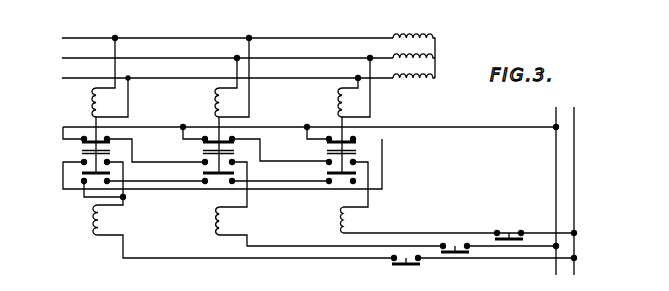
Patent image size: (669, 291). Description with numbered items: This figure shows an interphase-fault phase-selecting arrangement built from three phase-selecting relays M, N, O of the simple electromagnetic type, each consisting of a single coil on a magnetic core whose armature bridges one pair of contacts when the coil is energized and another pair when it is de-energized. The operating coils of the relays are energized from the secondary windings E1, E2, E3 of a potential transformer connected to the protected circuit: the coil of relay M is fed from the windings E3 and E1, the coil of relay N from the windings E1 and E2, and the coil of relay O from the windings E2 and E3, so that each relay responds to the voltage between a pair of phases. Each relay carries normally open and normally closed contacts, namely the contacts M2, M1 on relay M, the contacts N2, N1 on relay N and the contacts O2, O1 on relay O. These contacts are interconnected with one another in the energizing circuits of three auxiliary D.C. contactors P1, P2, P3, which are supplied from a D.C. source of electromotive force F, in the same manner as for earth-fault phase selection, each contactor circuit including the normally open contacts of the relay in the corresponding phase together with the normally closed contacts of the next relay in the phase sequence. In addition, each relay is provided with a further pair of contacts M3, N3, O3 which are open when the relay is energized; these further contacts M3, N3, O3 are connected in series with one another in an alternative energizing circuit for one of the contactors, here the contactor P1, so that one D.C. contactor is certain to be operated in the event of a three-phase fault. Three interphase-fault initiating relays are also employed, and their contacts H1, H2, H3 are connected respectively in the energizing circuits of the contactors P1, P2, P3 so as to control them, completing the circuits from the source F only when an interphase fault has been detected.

The potential transformer secondary winding E1 is at (413, 36).
The potential transformer secondary winding E2 is at (422, 54).
The potential transformer secondary winding E3 is at (422, 76).
The phase-selecting relay M is at (92, 105).
The normally closed contacts M1 is at (90, 141).
The normally open contacts M2 is at (90, 156).
The further pair of contacts M3 is at (92, 187).
The phase-selecting relay N is at (214, 101).
The normally closed contacts N1 is at (214, 140).
The normally open contacts N2 is at (214, 160).
The further pair of contacts N3 is at (224, 182).
The phase-selecting relay O is at (338, 102).
The normally closed contacts O1 is at (358, 133).
The normally open contacts O2 is at (348, 160).
The further pair of contacts O3 is at (346, 182).
The auxiliary D. C. contactor P1 is at (95, 221).
The auxiliary D. C. contactor P2 is at (227, 217).
The auxiliary D. C. contactor P3 is at (339, 226).
The interphase-fault initiating relay contacts H1 is at (413, 250).
The interphase-fault initiating relay contacts H2 is at (462, 242).
The interphase-fault initiating relay contacts H3 is at (509, 233).
The D. C. source of E. M. F. F is at (574, 153).